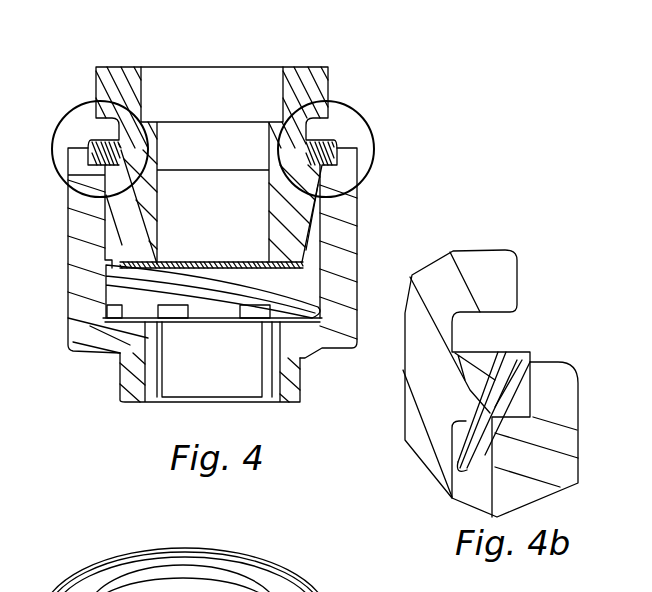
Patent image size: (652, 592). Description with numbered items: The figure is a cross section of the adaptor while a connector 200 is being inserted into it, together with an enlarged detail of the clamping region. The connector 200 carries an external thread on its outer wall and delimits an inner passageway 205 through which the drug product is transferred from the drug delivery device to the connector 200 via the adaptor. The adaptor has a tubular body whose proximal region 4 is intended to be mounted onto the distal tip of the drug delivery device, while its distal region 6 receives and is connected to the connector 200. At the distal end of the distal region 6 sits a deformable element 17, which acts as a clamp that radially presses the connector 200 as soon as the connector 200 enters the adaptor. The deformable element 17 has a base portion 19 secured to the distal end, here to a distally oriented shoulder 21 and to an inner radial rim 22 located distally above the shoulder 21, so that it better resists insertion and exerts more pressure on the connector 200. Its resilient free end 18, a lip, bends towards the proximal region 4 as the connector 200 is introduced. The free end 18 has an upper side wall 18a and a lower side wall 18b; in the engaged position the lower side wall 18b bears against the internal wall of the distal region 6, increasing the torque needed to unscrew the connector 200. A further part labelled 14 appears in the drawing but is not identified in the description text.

In FIG. 4, the connector 200 is at (300, 70).
In FIG. 4B, the connector 200 is at (458, 250).
In FIG. 4, the inner passageway 205 is at (203, 80).
In FIG. 4, the deformable element 17 is at (96, 140).
In FIG. 4B, the deformable element 17 is at (532, 413).
In FIG. 4, the distal region 6 is at (68, 203).
In FIG. 4, the proximal region 4 is at (118, 368).
In FIG. 4, the ring 14 is at (175, 591).
In FIG. 4B, the base portion 19 is at (508, 373).
In FIG. 4B, the distally oriented shoulder 21 is at (520, 400).
In FIG. 4B, the inner radial rim 22 is at (530, 358).
In FIG. 4B, the free end 18 is at (452, 497).
In FIG. 4B, the upper side wall 18a is at (462, 425).
In FIG. 4B, the lower side wall 18b is at (502, 400).